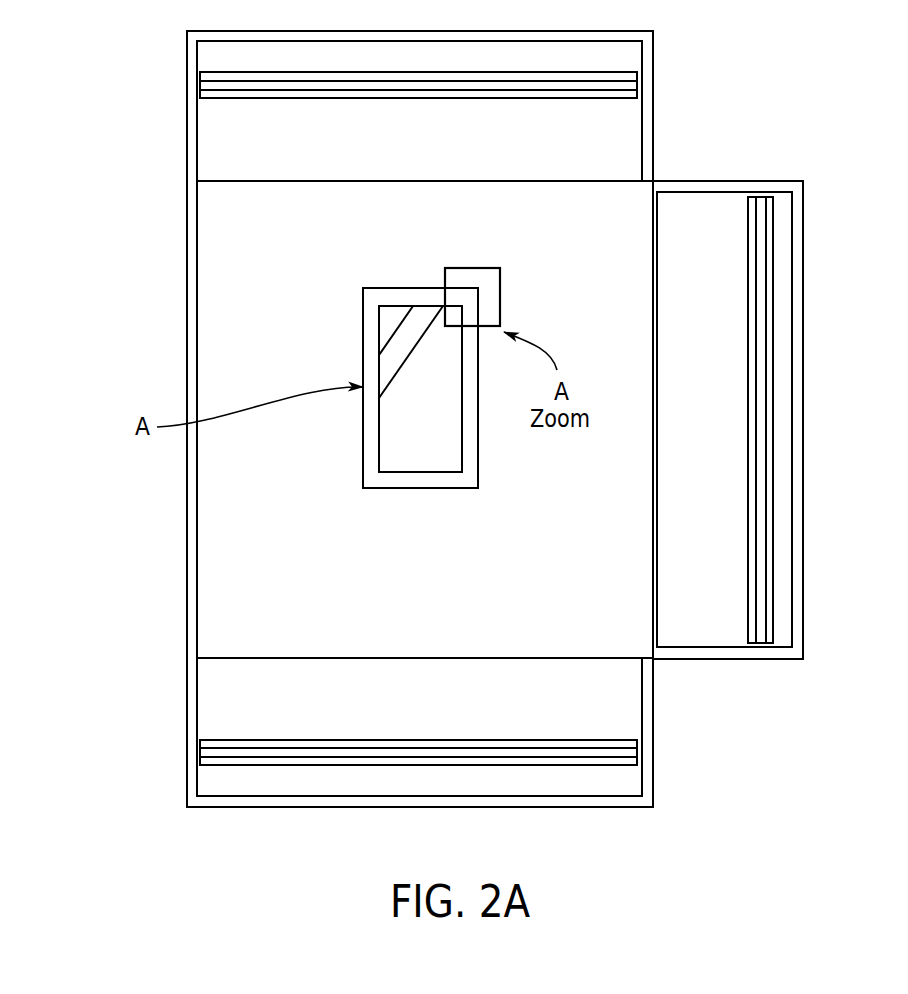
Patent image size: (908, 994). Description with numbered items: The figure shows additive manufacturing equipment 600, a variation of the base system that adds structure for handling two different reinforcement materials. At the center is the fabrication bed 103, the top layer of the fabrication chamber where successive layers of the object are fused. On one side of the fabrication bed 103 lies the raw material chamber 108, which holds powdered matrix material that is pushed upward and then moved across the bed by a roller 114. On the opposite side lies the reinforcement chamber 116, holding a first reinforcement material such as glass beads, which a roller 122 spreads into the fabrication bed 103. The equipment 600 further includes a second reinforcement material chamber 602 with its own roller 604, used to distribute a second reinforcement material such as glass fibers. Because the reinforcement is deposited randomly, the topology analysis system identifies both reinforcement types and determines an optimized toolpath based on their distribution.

The equipment 600 is at (203, 843).
The raw material chamber 108 is at (252, 147).
The fabrication bed 103 is at (252, 307).
The reinforcement chamber 116 is at (342, 682).
The roller 114 is at (645, 85).
The roller 122 is at (533, 735).
The roller 604 is at (718, 348).
The second reinforcement material chamber 602 is at (762, 193).